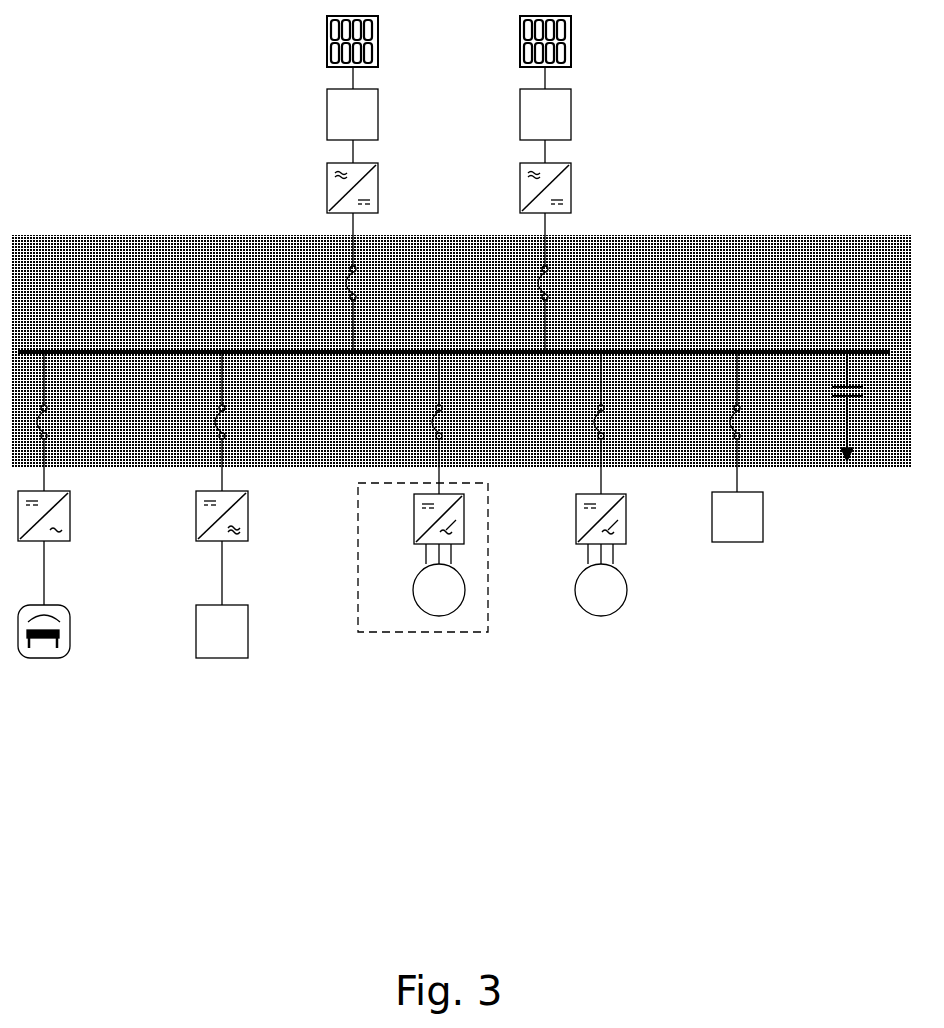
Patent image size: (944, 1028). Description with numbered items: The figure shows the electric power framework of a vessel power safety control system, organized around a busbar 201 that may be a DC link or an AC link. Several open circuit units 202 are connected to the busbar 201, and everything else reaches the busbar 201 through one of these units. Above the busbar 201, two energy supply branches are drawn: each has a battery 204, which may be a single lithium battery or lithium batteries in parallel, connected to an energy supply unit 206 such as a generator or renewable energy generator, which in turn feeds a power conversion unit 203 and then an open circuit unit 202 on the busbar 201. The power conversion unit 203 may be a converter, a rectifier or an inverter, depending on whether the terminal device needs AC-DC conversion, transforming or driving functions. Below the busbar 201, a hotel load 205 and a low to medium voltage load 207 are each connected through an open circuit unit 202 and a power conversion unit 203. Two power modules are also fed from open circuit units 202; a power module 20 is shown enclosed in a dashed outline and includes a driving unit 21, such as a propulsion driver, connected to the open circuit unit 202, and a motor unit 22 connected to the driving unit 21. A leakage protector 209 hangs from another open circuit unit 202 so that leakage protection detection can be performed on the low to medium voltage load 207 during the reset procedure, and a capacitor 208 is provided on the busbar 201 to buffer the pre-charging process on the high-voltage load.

The busbar 201 is at (773, 250).
The open circuit unit 202 is at (412, 353).
The power conversion unit 203 is at (312, 352).
The battery 204 is at (467, 41).
The hotel load 205 is at (66, 631).
The energy supply unit 206 is at (449, 114).
The low to medium voltage load 207 is at (222, 631).
The capacitor 208 is at (865, 407).
The leakage protector 209 is at (737, 517).
The power module 20 is at (402, 633).
The driving unit 21 is at (502, 519).
The motor unit 22 is at (520, 580).